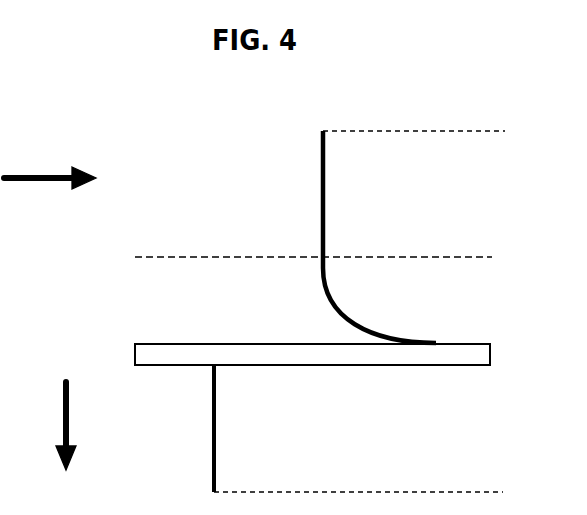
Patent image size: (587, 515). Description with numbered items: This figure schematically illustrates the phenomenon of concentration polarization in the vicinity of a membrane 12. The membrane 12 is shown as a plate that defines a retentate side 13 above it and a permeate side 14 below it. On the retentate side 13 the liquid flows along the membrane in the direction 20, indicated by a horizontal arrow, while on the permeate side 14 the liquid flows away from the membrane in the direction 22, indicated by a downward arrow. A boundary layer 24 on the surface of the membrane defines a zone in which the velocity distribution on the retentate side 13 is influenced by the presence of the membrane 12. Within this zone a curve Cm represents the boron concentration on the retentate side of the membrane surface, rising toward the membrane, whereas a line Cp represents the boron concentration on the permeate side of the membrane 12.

The membrane 12 is at (310, 356).
The retentate side 13 is at (505, 131).
The permeate side 14 is at (503, 365).
The direction 20 is at (50, 170).
The direction 22 is at (55, 426).
The boundary layer 24 is at (125, 257).
The boron concentration on the retentate side of the membrane surface Cm is at (338, 322).
The boron concentration on the permeate side of the membrane Cp is at (212, 432).